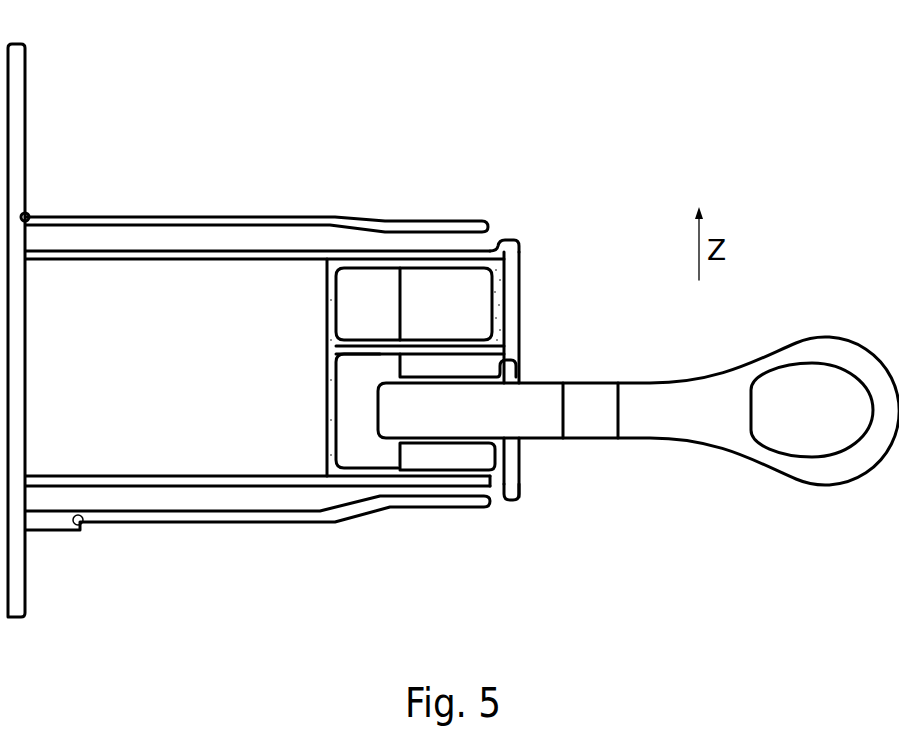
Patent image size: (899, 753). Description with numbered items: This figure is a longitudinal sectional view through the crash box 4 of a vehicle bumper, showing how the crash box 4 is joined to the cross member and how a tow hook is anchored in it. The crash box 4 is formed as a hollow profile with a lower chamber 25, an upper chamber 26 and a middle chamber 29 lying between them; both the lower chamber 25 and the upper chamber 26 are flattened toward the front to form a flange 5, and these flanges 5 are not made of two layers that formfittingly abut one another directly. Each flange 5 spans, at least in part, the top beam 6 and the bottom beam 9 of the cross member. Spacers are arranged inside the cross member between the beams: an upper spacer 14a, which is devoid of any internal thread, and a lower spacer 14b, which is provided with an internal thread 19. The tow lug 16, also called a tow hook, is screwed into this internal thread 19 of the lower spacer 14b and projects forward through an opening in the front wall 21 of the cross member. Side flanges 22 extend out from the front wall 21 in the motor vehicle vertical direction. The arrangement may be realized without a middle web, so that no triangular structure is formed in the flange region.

The crash box 4 is at (106, 188).
The flange 5 is at (421, 225).
The top beam 6 is at (495, 481).
The bottom beam 9 is at (489, 252).
The upper spacer 14a is at (476, 288).
The lower spacer 14b is at (477, 368).
The tow lug 16 is at (675, 420).
The internal thread 19 is at (453, 438).
The front wall 21 is at (508, 308).
The side flange 22 is at (516, 243).
The lower chamber 25 is at (168, 498).
The upper chamber 26 is at (213, 233).
The middle chamber 29 is at (178, 391).